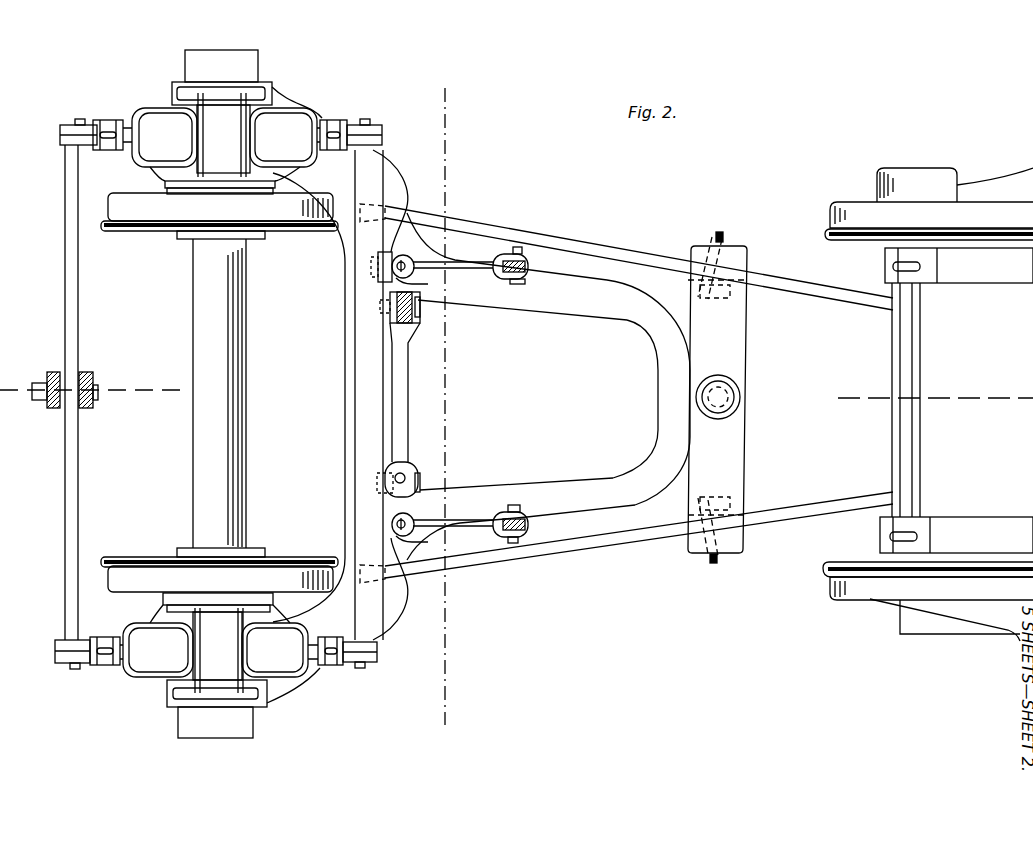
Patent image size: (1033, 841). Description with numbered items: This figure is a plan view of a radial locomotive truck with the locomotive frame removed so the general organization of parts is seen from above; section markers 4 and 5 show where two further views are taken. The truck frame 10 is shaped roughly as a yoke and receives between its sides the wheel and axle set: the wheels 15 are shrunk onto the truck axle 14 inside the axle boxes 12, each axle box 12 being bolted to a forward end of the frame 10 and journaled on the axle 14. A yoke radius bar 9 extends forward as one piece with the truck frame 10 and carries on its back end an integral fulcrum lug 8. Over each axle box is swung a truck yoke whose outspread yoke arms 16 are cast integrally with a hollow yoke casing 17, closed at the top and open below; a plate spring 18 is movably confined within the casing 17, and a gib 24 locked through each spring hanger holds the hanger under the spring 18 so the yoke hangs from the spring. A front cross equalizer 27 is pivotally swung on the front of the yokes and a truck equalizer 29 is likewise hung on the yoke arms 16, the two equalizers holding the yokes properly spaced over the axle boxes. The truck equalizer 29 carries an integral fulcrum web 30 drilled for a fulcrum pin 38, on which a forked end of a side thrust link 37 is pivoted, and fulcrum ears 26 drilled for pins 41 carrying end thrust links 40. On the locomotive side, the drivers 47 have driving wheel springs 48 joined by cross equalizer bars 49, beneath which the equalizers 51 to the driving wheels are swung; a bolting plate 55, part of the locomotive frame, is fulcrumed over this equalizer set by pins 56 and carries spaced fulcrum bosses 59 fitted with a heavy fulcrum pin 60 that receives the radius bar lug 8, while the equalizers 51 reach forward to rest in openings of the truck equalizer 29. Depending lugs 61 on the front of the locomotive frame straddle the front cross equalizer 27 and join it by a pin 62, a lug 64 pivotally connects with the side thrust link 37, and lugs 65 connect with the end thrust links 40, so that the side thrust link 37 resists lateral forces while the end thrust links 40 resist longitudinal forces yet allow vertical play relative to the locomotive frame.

The section line 4- 4 is at (417, 113).
The section line 5- 5 is at (995, 388).
The fulcrum lug 8 is at (697, 367).
The yoke radius bar 9 is at (522, 300).
The truck frame 10 is at (323, 117).
The axle box 12 is at (280, 98).
The truck axle 14 is at (203, 378).
The wheels 15 is at (128, 222).
The yoke arms 16 is at (104, 130).
The yoke casing 17 is at (221, 393).
The plate spring 18 is at (142, 132).
The gib 24 is at (106, 665).
The fulcrum ears 26 is at (412, 272).
The front cross equalizer 27 is at (74, 347).
The truck equalizer 29 is at (379, 185).
The fulcrum web 30 is at (412, 468).
The side thrust link 37 is at (408, 387).
The fulcrum pin 38 is at (378, 483).
The end thrust links 40 is at (450, 262).
The fulcrum pins 41 is at (390, 255).
The locomotive drivers 47 is at (855, 208).
The driving wheel springs 48 is at (956, 400).
The cross equalizer bars 49 is at (898, 380).
The equalizers to the driving wheels 51 is at (368, 219).
The bolting plate 55 is at (738, 472).
The pins 56 is at (712, 238).
The fulcrum bosses 59 is at (741, 397).
The fulcrum pin 60 is at (727, 412).
The depending lugs 61 is at (53, 408).
The pin 62 is at (31, 383).
The lug 64 is at (421, 332).
The lugs 65 is at (527, 265).